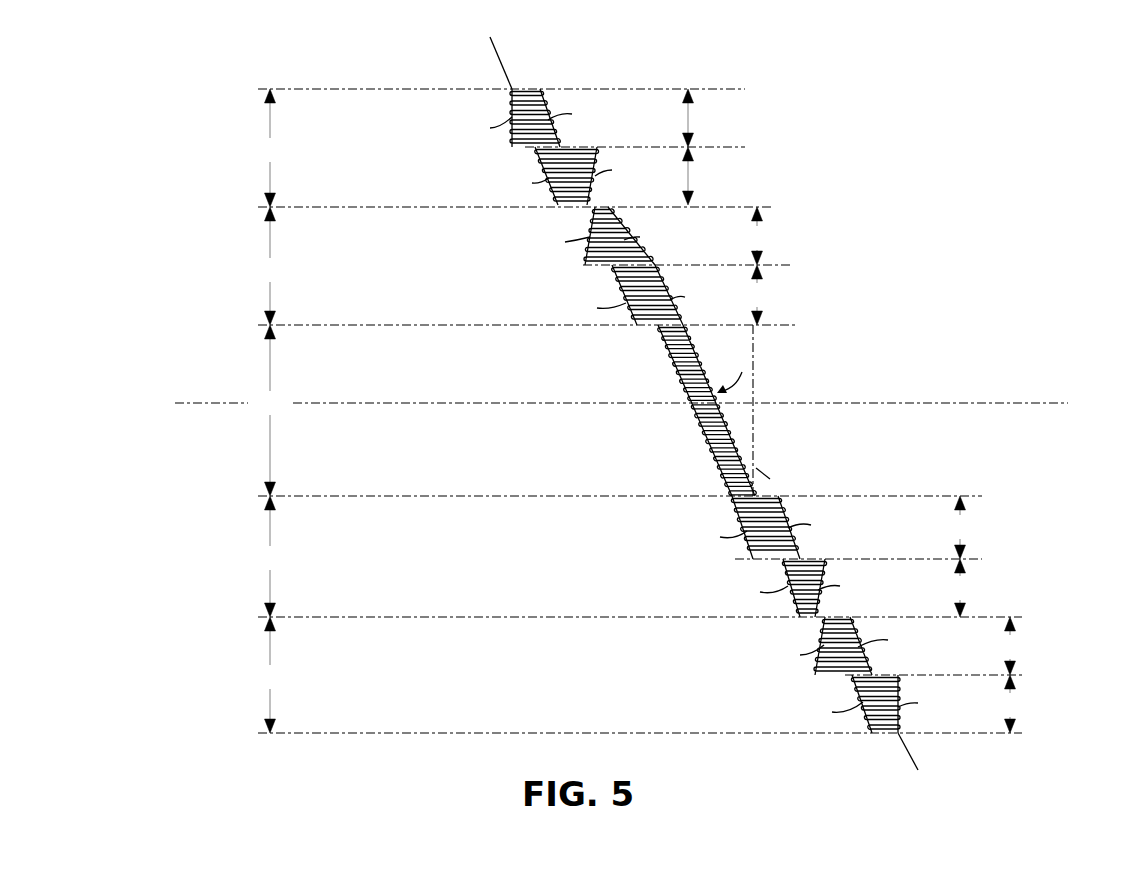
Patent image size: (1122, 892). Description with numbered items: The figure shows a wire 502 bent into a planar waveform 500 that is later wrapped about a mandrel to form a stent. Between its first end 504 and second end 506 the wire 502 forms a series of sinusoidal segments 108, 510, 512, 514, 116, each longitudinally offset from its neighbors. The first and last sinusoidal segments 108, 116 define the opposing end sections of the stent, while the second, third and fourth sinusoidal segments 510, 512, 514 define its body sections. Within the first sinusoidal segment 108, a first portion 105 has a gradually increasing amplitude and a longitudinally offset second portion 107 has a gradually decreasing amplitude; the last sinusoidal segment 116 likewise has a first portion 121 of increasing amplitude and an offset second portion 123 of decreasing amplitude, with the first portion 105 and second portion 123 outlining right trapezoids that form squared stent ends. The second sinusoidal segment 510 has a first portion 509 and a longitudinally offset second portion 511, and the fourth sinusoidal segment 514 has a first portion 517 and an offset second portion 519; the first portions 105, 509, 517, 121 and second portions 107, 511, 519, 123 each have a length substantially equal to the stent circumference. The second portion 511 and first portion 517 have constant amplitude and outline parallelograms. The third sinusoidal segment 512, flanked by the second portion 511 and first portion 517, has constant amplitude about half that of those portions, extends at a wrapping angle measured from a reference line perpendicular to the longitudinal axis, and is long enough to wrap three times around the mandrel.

The planar waveform 500 is at (888, 220).
The wire 502 is at (678, 403).
The first end 504 is at (498, 52).
The second end 506 is at (913, 760).
The first sinusoidal segment 108 is at (270, 148).
The first portion 105 is at (673, 118).
The second portion 107 is at (673, 176).
The second sinusoidal segment 510 is at (270, 266).
The first portion 509 is at (755, 236).
The second portion 511 is at (755, 295).
The third sinusoidal segment 512 is at (270, 410).
The fourth sinusoidal segment 514 is at (270, 556).
The first portion 517 is at (960, 527).
The second portion 519 is at (960, 588).
The last sinusoidal segment 116 is at (270, 675).
The first portion 121 is at (1010, 646).
The second portion 123 is at (1010, 704).